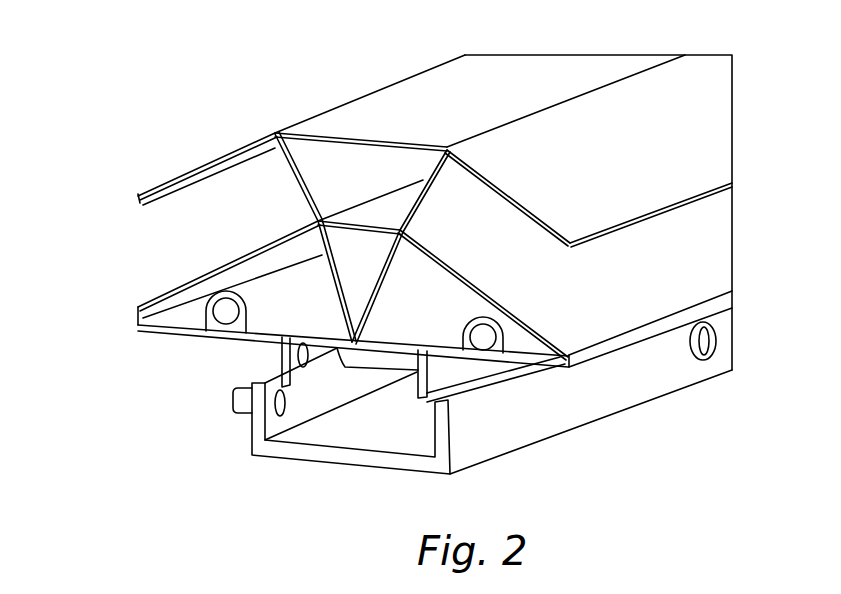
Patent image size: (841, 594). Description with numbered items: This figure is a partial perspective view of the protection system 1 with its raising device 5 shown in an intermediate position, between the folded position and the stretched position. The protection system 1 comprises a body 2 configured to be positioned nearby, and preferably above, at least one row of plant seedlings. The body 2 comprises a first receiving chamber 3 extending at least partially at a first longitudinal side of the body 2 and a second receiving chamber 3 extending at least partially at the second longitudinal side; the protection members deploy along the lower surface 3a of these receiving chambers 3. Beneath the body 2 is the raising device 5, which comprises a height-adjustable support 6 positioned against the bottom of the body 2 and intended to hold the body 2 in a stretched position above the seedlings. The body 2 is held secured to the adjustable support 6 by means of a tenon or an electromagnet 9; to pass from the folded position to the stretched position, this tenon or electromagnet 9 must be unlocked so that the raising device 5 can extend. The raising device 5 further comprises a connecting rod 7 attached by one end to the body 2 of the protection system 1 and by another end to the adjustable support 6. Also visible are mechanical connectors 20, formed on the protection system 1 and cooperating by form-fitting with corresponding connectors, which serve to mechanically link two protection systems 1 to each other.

The protection system 1 is at (125, 425).
The body 2 is at (694, 128).
The receiving chamber 3 is at (205, 215).
The lower surface 3a is at (246, 260).
The raising device 5 is at (351, 426).
The height-adjustable support 6 is at (336, 455).
The connecting rod 7 is at (527, 370).
The tenon or electromagnet 9 is at (237, 400).
The mechanical connector 20 is at (222, 318).